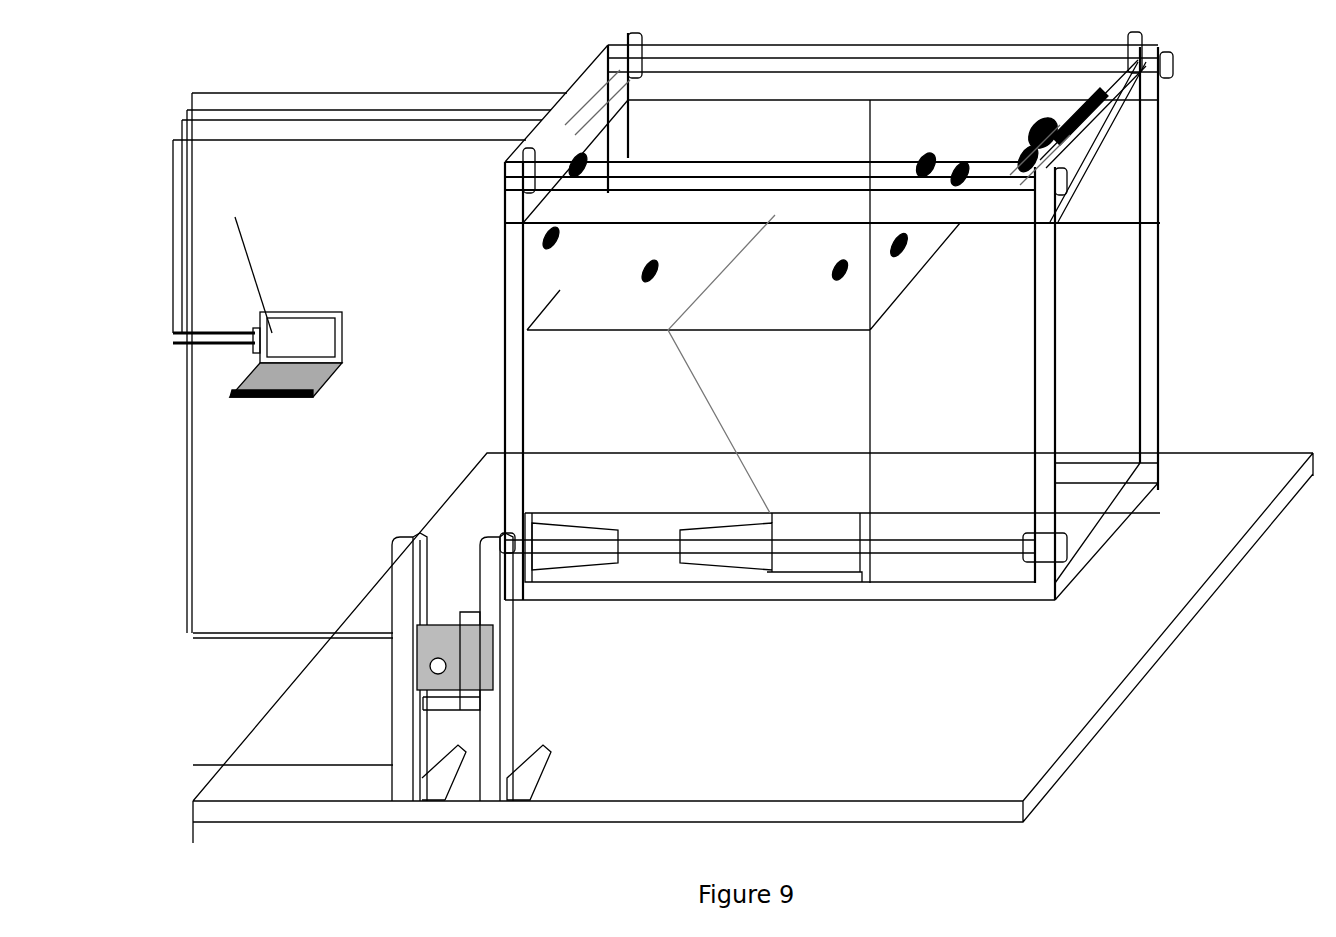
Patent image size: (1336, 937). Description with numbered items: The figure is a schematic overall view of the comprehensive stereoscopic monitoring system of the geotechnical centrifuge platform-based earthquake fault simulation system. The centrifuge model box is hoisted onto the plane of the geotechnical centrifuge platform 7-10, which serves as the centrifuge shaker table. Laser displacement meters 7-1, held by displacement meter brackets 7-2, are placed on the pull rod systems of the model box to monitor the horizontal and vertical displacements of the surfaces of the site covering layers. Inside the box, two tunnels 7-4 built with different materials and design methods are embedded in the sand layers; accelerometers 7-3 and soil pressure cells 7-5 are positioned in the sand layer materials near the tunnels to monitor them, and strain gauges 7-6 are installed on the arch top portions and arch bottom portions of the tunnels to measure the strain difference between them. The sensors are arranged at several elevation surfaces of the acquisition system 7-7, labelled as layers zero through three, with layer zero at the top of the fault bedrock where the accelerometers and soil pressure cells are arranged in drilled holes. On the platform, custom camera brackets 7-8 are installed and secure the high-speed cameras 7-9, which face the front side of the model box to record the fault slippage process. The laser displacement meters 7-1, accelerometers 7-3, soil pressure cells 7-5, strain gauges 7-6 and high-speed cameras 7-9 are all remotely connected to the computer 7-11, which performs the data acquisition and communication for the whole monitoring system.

The laser displacement meter 7-1 is at (607, 105).
The displacement meter bracket 7-2 is at (570, 138).
The accelerometer 7-3 is at (607, 172).
The tunnel 7-4 is at (607, 190).
The soil pressure cell 7-5 is at (613, 203).
The strain gauge 7-6 is at (640, 270).
The elevation surface of acquisition system 7-7 is at (600, 205).
The camera bracket 7-8 is at (413, 533).
The high-speed camera 7-9 is at (457, 647).
The geotechnical centrifuge platform 7-10 is at (1065, 660).
The computer 7-11 is at (297, 397).